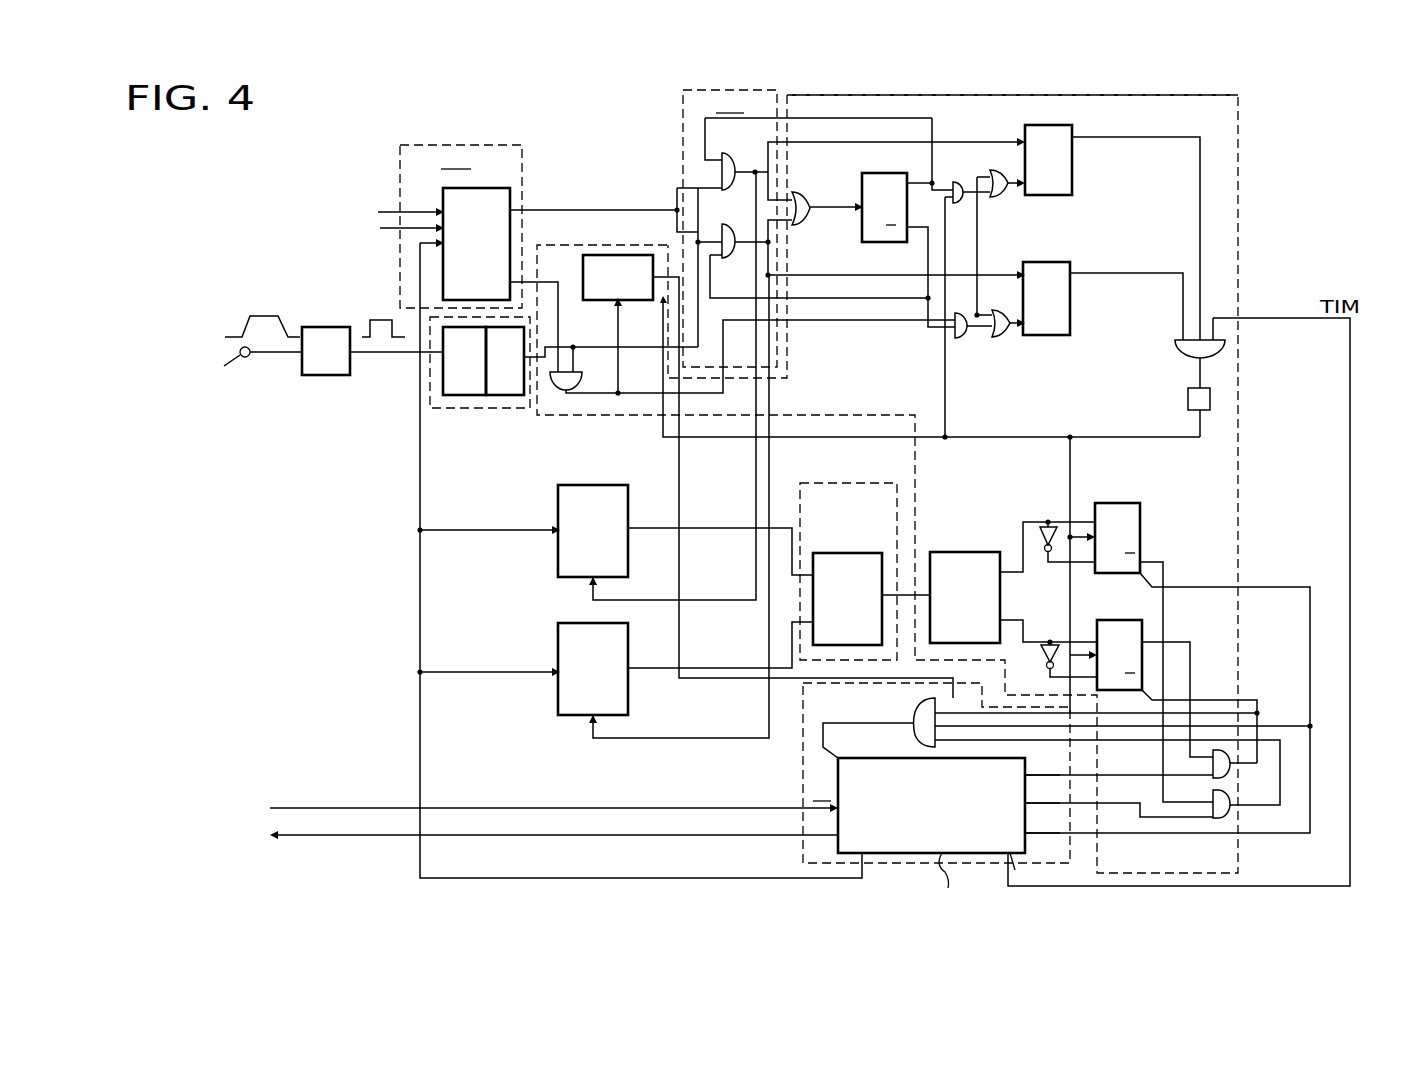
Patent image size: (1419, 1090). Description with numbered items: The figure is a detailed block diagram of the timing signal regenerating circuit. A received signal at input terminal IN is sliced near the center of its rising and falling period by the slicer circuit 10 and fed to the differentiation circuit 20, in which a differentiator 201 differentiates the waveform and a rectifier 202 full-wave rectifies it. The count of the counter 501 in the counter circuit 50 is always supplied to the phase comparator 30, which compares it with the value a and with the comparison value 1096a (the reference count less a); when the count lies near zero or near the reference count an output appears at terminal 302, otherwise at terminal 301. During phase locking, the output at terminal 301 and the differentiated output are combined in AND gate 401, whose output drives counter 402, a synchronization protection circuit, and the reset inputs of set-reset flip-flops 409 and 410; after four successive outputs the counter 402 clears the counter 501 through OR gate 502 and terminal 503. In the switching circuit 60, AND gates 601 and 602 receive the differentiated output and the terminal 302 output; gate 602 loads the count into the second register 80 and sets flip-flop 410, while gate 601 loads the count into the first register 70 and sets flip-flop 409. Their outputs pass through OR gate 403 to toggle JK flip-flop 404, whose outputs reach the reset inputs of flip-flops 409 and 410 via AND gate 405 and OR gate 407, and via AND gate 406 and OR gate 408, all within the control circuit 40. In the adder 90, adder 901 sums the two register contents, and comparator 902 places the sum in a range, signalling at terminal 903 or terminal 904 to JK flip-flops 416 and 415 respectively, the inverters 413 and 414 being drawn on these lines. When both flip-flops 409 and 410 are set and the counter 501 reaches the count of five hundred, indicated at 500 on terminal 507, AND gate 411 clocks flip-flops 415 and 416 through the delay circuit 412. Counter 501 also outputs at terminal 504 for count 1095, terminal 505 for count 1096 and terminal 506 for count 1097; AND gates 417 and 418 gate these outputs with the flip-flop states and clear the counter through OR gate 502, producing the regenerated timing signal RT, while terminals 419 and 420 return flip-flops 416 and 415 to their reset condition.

The slicer circuit 10 is at (362, 402).
The differentiation circuit 20 is at (448, 410).
The differentiator 201 is at (478, 377).
The rectifier 202 is at (517, 377).
The phase comparator 30 is at (556, 124).
The terminal 301 is at (513, 324).
The terminal 302 is at (572, 211).
The input signal a 1096a is at (381, 225).
The control circuit 40 is at (1135, 98).
The AND gate 401 is at (751, 368).
The counter 402 is at (650, 255).
The OR gate 403 is at (826, 187).
The JK flip-flop 404 is at (865, 245).
The AND gate 405 is at (963, 203).
The AND gate 406 is at (950, 335).
The OR gate 407 is at (1000, 196).
The OR gate 408 is at (998, 338).
The set-reset flip-flop 409 is at (1072, 158).
The set-reset flip-flop 410 is at (1070, 290).
The AND gate 411 is at (1185, 348).
The delay circuit 412 is at (1188, 408).
The inverter G10 413 is at (1050, 525).
The inverter G11 414 is at (1055, 645).
The flip-flop 415 is at (1140, 508).
The JK flip-flop 416 is at (1138, 624).
The AND gate 417 is at (1232, 770).
The AND gate 418 is at (1232, 812).
The terminal 419 is at (1145, 685).
The terminal 420 is at (1150, 571).
The counter circuit 50 is at (803, 763).
The count value of five hundred 500 is at (992, 883).
The counter 501 is at (547, 837).
The OR gate 502 is at (915, 708).
The terminal 503 is at (830, 752).
The terminal 504 is at (1018, 775).
The terminal 505 is at (1020, 803).
The terminal 506 is at (1020, 833).
The terminal 507 is at (1032, 868).
The count value 1095 is at (1064, 797).
The reference count value 1096 is at (1064, 825).
The count value 1097 is at (1064, 853).
The switching circuit 60 is at (812, 66).
The AND gate 601 is at (722, 170).
The AND gate 602 is at (860, 248).
The first register 70 is at (558, 558).
The second register 80 is at (572, 630).
The adder 90 is at (885, 468).
The adder 901 is at (862, 560).
The comparator 902 is at (995, 552).
The terminal 903 is at (1029, 628).
The terminal 904 is at (1026, 550).